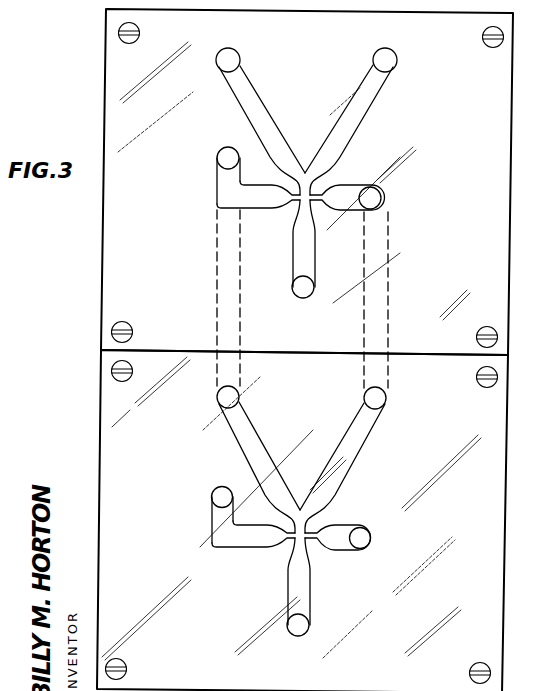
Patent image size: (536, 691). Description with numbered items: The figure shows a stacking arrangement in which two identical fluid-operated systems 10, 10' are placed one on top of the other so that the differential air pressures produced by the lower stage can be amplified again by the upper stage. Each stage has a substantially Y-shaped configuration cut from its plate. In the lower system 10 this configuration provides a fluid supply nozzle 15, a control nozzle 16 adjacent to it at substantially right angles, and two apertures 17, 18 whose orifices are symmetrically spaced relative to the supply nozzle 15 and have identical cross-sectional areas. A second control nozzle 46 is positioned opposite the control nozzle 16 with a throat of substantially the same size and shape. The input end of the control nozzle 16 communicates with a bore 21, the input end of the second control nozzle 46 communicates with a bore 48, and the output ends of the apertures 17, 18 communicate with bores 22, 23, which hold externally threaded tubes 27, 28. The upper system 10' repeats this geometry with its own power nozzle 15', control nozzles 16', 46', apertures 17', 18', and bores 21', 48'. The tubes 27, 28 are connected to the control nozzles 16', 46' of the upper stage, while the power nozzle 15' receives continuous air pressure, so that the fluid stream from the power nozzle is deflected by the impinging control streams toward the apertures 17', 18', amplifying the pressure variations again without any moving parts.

The fluid-operated system 10 is at (316, 520).
The fluid-operated system 10' is at (318, 182).
The fluid supply nozzle 15 is at (312, 587).
The power nozzle 15' is at (319, 249).
The control nozzle 16 is at (338, 525).
The control nozzle 16' is at (347, 185).
The aperture 17 is at (347, 468).
The aperture 17' is at (353, 121).
The aperture 18 is at (255, 467).
The aperture 18' is at (258, 121).
The bore 21 is at (380, 538).
The bore 21' is at (390, 198).
The bore 22 is at (386, 397).
The bore 23 is at (217, 400).
The tube 27 is at (372, 291).
The tube 28 is at (226, 287).
The second control nozzle 46 is at (253, 549).
The control nozzle 46' is at (258, 206).
The bore 48 is at (207, 515).
The bore 48' is at (211, 175).